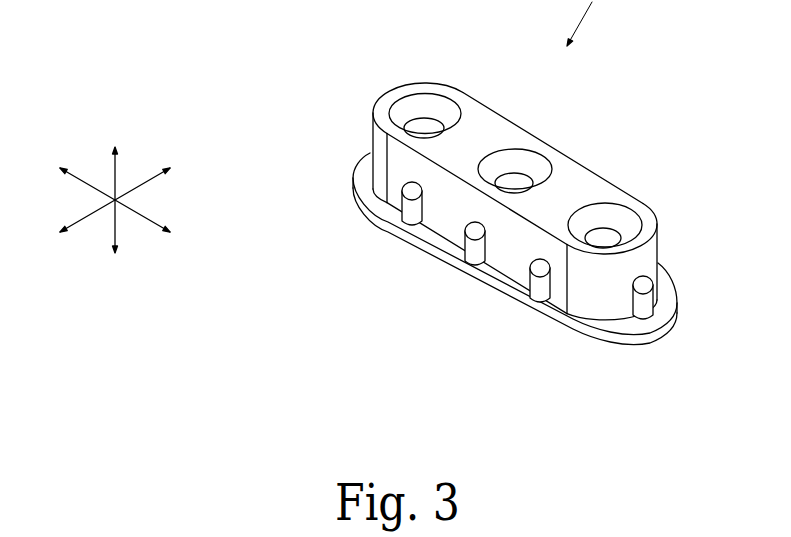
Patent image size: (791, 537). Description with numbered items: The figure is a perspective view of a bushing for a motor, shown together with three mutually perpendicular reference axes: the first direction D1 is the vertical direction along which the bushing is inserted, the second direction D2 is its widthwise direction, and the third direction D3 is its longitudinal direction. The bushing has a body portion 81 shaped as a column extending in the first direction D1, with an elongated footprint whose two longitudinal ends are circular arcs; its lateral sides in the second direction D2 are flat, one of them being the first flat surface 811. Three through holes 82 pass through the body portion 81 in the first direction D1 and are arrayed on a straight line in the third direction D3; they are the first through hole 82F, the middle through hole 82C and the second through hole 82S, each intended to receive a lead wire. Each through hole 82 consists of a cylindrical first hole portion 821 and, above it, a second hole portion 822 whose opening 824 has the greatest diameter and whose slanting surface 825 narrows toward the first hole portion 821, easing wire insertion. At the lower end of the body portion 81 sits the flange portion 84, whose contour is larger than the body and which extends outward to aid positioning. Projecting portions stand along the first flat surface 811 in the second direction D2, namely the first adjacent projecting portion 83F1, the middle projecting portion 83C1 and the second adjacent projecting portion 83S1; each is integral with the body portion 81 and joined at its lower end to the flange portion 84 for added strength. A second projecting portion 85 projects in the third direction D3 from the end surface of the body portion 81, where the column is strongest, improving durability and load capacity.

The body portion 81 is at (497, 161).
The first flat surface 811 is at (576, 334).
The through holes 82 is at (556, 141).
The first through hole 82F is at (455, 95).
The middle through hole 82C is at (553, 162).
The second through hole 82S is at (652, 223).
The first hole portion 821 is at (367, 118).
The second hole portion 822 is at (402, 82).
The opening 824 is at (432, 96).
The slanting surface 825 is at (372, 108).
The first adjacent projecting portion 83F1 is at (407, 216).
The middle projecting portion 83C1 is at (470, 268).
The second adjacent projecting portion 83S1 is at (535, 305).
The flange portion 84 is at (472, 257).
The second projecting portion 85 is at (652, 308).
The first direction D1 is at (113, 185).
The second direction D2 is at (101, 210).
The third direction D3 is at (127, 210).